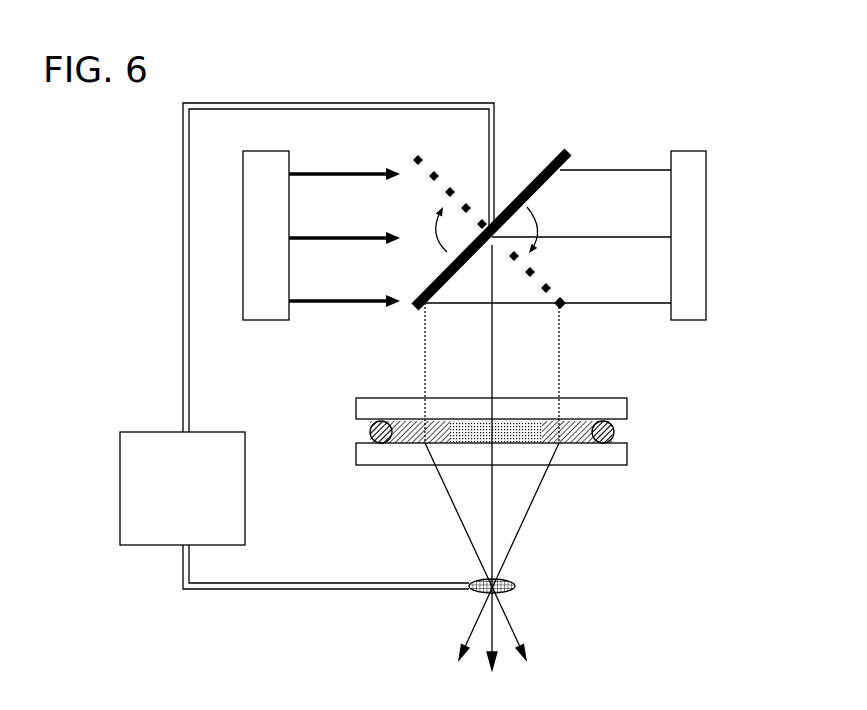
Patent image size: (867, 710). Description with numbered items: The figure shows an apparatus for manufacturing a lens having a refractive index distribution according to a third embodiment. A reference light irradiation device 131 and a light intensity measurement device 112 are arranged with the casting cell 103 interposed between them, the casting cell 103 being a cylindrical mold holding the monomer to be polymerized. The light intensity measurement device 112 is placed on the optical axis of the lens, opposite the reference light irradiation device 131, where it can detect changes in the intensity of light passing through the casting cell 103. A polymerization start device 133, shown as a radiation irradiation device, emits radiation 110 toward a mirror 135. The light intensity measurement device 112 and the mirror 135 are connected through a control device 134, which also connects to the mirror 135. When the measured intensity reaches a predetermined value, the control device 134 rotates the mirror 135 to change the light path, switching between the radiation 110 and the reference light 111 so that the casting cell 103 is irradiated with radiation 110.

The radiation 110 is at (316, 171).
The mirror 135 is at (572, 148).
The reference light irradiation device 131 is at (701, 283).
The polymerization start device 133 is at (262, 312).
The control device 134 is at (245, 448).
The reference light 111 is at (563, 368).
The casting cell 103 is at (638, 395).
The light intensity measurement device 112 is at (514, 583).